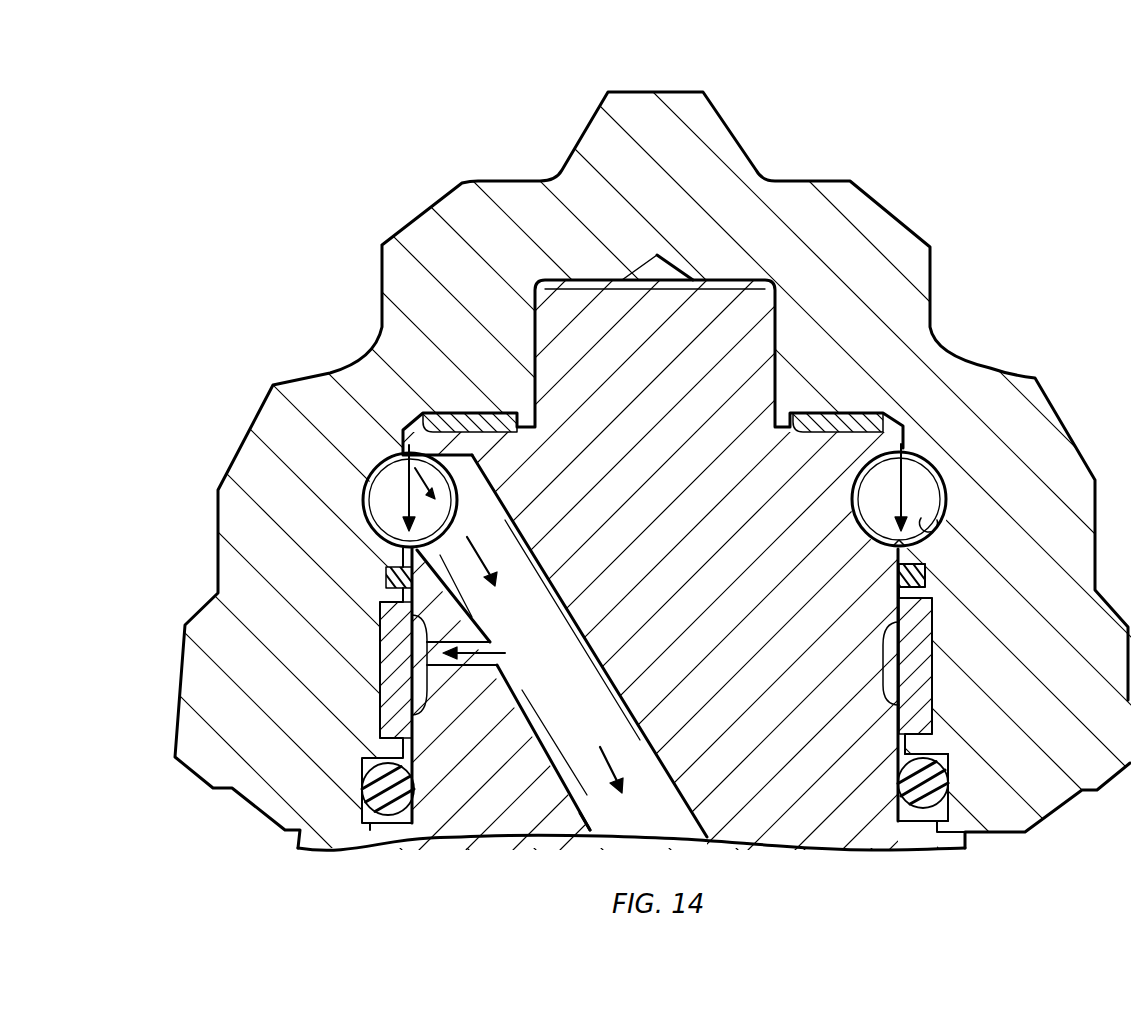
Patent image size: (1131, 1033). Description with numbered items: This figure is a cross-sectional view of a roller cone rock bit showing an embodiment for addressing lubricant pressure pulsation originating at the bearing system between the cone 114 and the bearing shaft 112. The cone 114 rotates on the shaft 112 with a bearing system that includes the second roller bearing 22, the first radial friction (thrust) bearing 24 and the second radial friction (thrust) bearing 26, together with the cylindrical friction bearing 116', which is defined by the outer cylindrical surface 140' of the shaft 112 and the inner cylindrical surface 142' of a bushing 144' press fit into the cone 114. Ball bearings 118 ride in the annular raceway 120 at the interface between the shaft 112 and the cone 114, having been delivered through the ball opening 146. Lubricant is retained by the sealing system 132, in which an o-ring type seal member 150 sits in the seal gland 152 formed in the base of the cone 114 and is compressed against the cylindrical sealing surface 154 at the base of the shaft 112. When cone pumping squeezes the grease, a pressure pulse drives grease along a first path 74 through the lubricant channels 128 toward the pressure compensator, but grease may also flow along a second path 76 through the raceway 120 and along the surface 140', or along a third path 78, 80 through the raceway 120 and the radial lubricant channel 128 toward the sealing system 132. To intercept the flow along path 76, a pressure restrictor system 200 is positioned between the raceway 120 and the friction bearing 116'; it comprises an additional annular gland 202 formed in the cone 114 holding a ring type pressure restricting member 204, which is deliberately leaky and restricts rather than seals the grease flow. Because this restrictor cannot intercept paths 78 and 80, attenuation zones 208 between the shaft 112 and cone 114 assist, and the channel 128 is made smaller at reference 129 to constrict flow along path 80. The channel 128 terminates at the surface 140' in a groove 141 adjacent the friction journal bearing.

The cone 114 is at (811, 152).
The second roller bearing 22 is at (800, 326).
The second radial friction (thrust) bearing 26 is at (736, 262).
The first radial friction (thrust) bearing 24 is at (868, 396).
The bearing shaft 112 is at (790, 504).
The second path 76 is at (393, 470).
The ball bearings 118 is at (916, 472).
The annular raceway 120 is at (937, 528).
The outer cylindrical surface 140' is at (860, 547).
The lubricant channels 128 is at (508, 545).
The third path 78 is at (487, 557).
The first path 74 is at (600, 747).
The third path 80 is at (500, 656).
The smaller channel portion 129 is at (462, 639).
The ball opening 146 is at (590, 827).
The annular gland 202 is at (387, 562).
The ring type pressure restricting member 204 is at (385, 578).
The pressure restrictor system 200 is at (363, 600).
The groove 141 is at (418, 677).
The attenuation zones 208 is at (440, 750).
The cylindrical friction bearing 116' is at (982, 698).
The inner cylindrical surface 142' is at (948, 677).
The bushing 144' is at (942, 663).
The seal gland 152 is at (948, 758).
The sealing system 132 is at (968, 768).
The o-ring type seal member 150 is at (948, 806).
The cylindrical sealing surface 154 is at (903, 764).